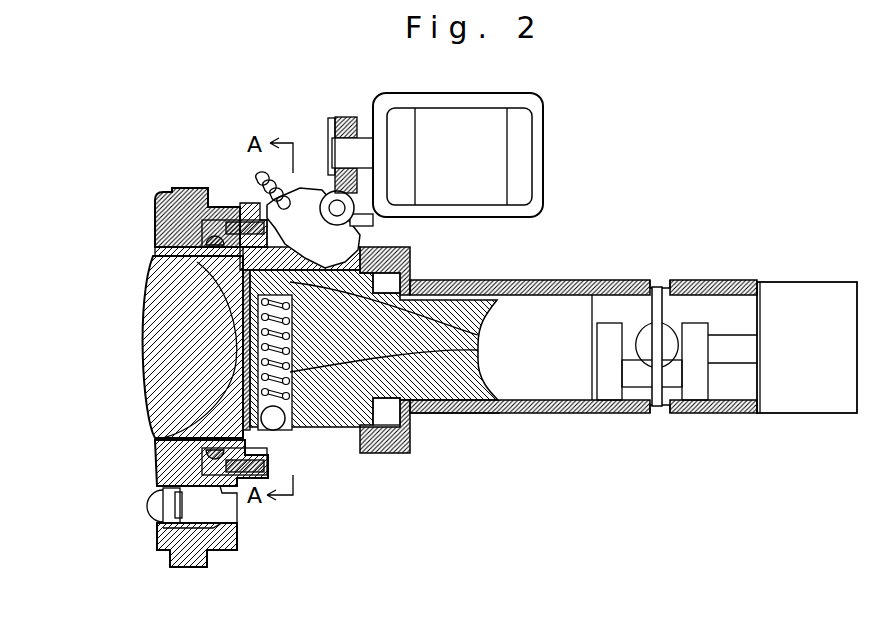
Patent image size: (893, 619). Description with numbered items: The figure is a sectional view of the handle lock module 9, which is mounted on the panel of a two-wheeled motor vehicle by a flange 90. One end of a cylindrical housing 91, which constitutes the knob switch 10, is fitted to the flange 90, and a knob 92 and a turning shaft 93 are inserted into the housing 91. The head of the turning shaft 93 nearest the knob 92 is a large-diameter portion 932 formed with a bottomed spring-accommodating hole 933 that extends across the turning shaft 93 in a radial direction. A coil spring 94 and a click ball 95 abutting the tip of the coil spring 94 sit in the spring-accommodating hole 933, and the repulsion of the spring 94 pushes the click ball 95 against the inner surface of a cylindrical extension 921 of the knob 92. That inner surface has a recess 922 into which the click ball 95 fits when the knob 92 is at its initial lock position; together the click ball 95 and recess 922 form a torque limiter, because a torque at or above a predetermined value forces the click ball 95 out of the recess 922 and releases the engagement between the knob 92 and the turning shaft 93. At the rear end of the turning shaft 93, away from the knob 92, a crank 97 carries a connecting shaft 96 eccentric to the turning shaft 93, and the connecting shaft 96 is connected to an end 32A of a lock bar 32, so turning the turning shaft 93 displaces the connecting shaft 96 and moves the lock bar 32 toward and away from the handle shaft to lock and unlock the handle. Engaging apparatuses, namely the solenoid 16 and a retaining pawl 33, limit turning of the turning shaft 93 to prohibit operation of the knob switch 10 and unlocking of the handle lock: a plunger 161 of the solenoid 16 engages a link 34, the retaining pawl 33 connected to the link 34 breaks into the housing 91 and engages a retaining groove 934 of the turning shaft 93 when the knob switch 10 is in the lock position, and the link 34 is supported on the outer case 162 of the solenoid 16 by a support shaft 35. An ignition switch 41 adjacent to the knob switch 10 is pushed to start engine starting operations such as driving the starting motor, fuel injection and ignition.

The handle lock module 9 is at (515, 519).
The knob switch 10 is at (129, 341).
The solenoid 16 is at (545, 135).
The plunger 161 is at (327, 153).
The outer case 162 is at (537, 193).
The lock bar 32 is at (665, 333).
The end of lock bar 32A is at (653, 317).
The retaining pawl 33 is at (312, 217).
The link 34 is at (345, 115).
The support shaft 35 is at (343, 212).
The ignition switch 41 is at (147, 510).
The flange 90 is at (190, 187).
The cylindrical housing 91 is at (415, 438).
The knob 92 is at (150, 407).
The turning shaft 93 is at (563, 380).
The coil spring 94 is at (478, 353).
The click ball 95 is at (300, 453).
The connecting shaft 96 is at (633, 380).
The crank 97 is at (693, 387).
The cylindrical extension 921 is at (353, 453).
The recess 922 is at (280, 452).
The large-diameter portion 932 is at (400, 460).
The spring-accommodating hole 933 is at (410, 270).
The retaining groove 934 is at (412, 247).